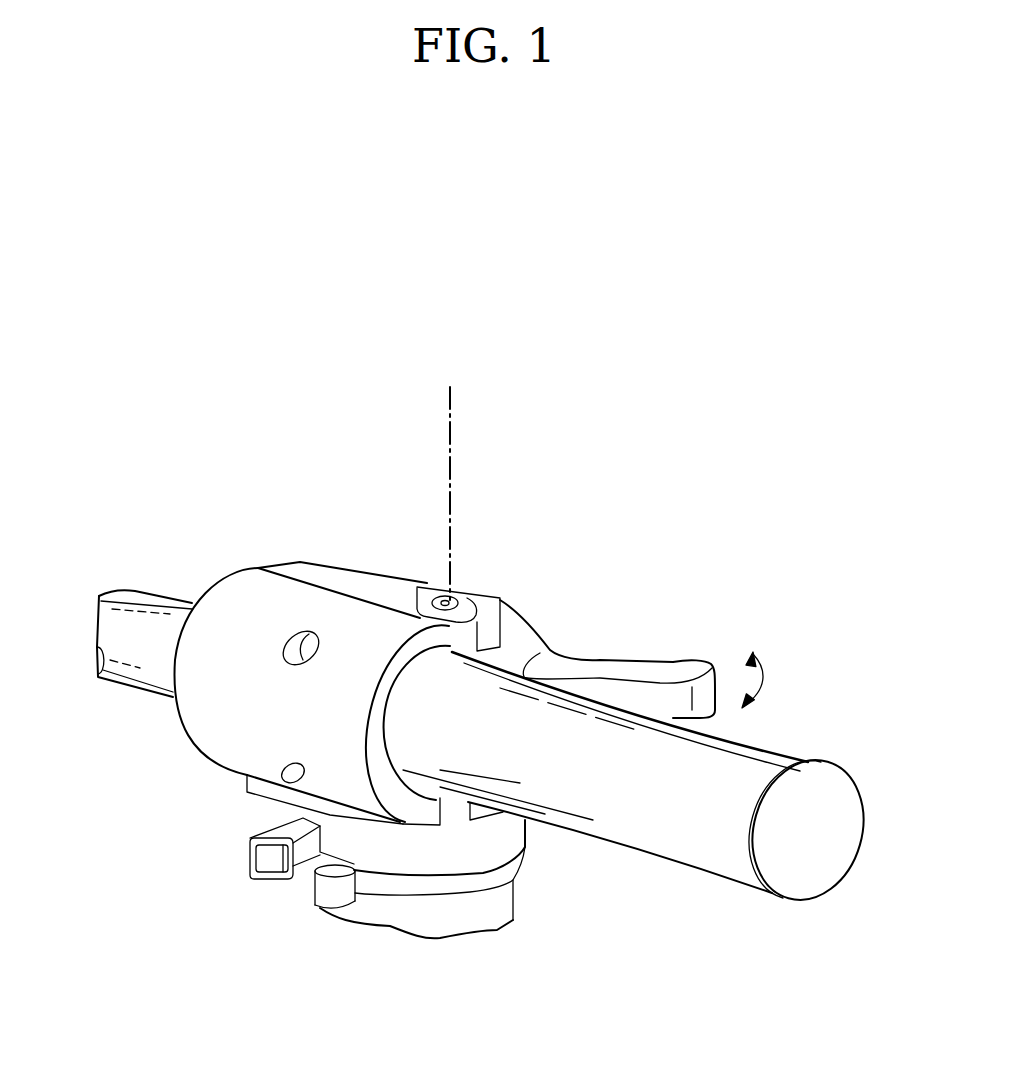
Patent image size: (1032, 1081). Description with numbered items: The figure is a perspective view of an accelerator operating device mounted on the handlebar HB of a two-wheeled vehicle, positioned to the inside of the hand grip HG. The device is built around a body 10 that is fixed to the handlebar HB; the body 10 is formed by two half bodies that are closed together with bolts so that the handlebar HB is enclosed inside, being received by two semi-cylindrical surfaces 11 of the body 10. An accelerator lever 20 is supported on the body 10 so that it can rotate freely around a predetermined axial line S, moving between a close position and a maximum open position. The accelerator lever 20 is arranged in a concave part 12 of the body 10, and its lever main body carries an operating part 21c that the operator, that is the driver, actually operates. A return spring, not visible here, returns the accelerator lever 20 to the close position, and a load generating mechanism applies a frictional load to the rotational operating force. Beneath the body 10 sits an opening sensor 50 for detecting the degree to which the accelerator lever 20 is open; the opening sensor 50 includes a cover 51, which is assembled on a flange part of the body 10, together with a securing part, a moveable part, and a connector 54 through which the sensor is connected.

The body 10 is at (337, 643).
The semi-cylindrical surface 11 is at (300, 568).
The concave part 12 is at (253, 597).
The accelerator lever 20 is at (618, 625).
The operating part 21c is at (662, 670).
The opening sensor 50 is at (328, 935).
The cover 51 is at (446, 930).
The connector 54 is at (248, 858).
The handlebar HB is at (133, 616).
The hand grip HG is at (714, 850).
The axial line S is at (450, 407).